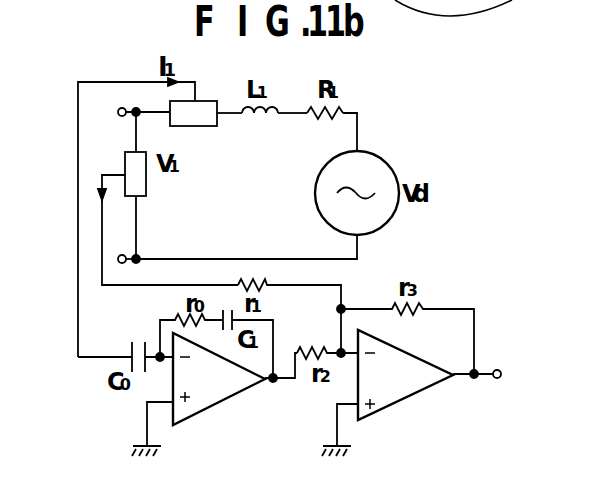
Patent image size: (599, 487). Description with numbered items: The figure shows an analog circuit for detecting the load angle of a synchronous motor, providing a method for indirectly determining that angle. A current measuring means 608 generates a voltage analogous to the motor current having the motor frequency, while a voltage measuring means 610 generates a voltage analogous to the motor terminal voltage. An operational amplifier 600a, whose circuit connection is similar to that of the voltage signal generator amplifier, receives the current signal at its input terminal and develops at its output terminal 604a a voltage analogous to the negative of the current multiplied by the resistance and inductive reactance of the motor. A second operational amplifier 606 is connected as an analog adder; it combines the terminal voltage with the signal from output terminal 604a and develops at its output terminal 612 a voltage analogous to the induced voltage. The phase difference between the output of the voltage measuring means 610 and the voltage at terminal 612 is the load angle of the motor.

The current measuring means 608 is at (207, 126).
The voltage measuring means 610 is at (142, 181).
The operational amplifier 600a is at (206, 397).
The output terminal 604a is at (273, 382).
The operational amplifier 606 is at (415, 386).
The output terminal 612 is at (500, 378).